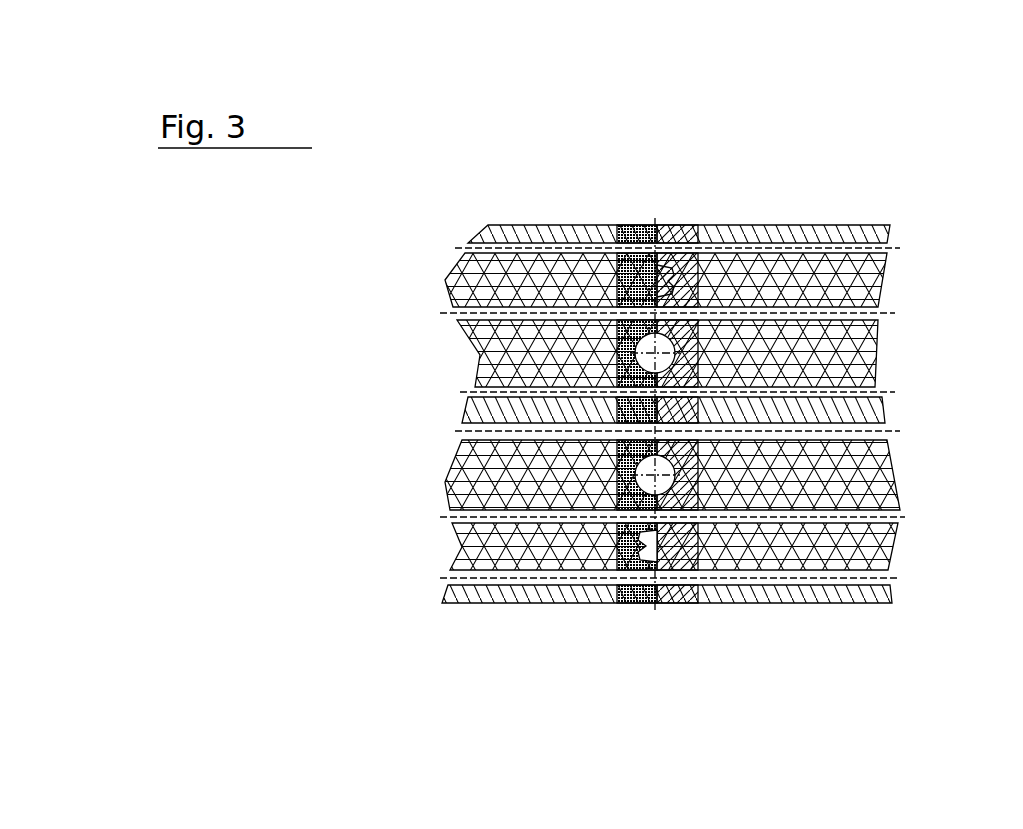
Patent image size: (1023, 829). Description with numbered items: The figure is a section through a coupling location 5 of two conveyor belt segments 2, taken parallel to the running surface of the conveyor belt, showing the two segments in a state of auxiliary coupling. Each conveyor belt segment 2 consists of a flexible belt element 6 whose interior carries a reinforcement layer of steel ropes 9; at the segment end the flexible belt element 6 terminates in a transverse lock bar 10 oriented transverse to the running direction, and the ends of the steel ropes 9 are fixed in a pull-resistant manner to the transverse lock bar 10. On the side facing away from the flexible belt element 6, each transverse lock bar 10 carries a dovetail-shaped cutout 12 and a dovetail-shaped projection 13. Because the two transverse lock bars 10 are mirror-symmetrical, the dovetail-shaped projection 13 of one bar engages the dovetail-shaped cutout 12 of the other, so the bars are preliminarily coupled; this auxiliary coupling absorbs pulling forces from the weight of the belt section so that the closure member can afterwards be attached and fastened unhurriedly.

The conveyor belt segment 2 is at (702, 459).
The coupling location 5 is at (709, 459).
The flexible belt element 6 is at (514, 604).
The steel ropes 9 is at (883, 252).
The transverse lock bar 10 is at (637, 225).
The dovetail-shaped cutout 12 is at (676, 277).
The dovetail-shaped projection 13 is at (650, 548).